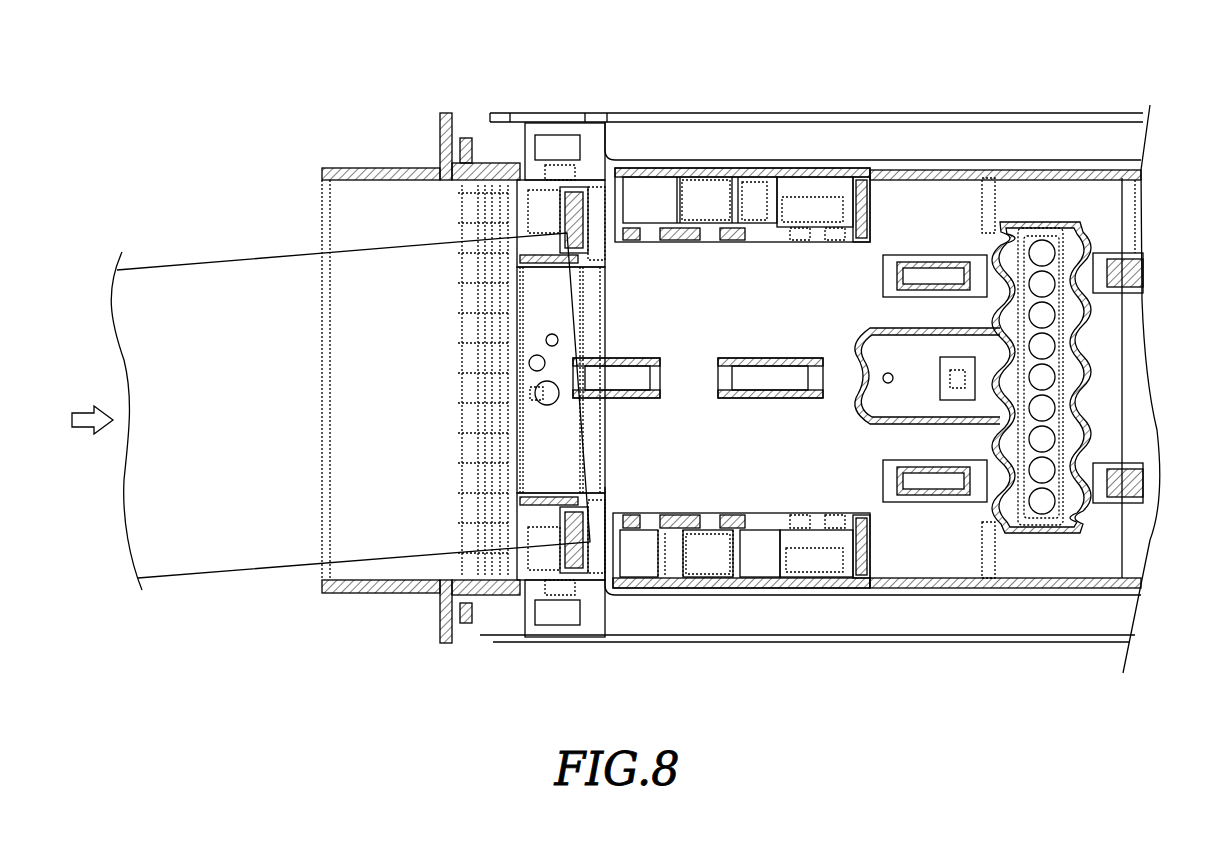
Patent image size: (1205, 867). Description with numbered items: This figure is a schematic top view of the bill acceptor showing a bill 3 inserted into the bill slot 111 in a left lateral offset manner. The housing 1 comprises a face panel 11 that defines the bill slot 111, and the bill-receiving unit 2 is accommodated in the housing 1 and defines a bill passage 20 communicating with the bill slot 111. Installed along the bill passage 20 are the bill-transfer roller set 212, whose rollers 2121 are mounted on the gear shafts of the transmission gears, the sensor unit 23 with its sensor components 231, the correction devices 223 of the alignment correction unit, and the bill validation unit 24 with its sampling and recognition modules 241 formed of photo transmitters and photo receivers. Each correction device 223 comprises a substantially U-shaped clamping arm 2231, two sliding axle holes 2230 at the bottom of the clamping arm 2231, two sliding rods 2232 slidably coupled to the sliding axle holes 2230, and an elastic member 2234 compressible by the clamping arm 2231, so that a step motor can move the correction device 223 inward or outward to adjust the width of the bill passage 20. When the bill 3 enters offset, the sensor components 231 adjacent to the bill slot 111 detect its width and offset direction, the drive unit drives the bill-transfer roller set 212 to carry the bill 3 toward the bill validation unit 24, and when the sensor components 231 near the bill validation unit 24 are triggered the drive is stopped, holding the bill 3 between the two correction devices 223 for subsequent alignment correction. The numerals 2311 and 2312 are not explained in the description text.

The housing 1 is at (855, 125).
The bill-receiving unit 2 is at (986, 70).
The bill 3 is at (215, 262).
The face panel 11 is at (434, 130).
The bill slot 111 is at (359, 180).
The bill passage 20 is at (895, 210).
The bill-transfer roller set 212 is at (960, 257).
The rollers 2121 is at (626, 357).
The sensor unit 23 is at (556, 62).
The sensor components 231 is at (547, 172).
The latch hook 2311 is at (458, 348).
The pressing portion 2312 is at (890, 385).
The correction device 223 is at (557, 680).
The sliding axle holes 2230 is at (827, 530).
The U-shaped clamping arm 2231 is at (722, 562).
The sliding rods 2232 is at (655, 535).
The elastic member 2234 is at (704, 533).
The bill validation unit 24 is at (1070, 226).
The sampling and recognition module 241 is at (1043, 250).